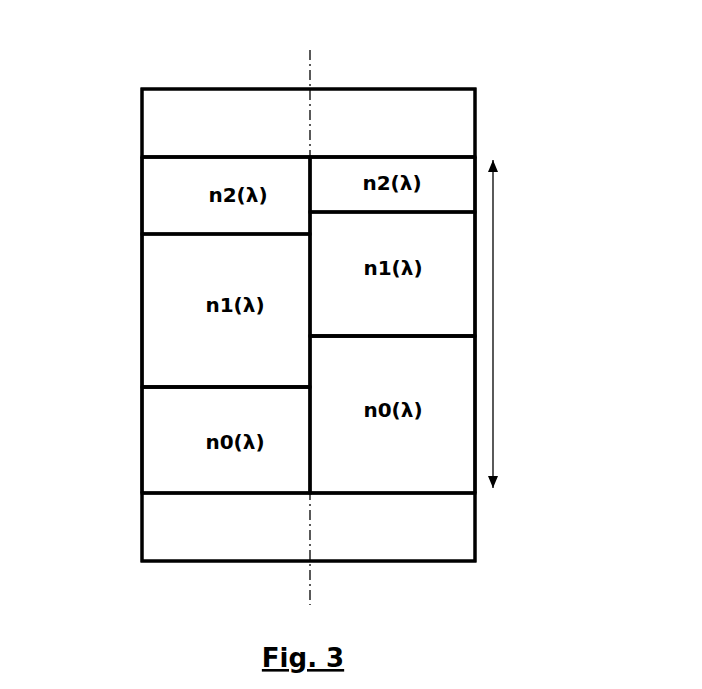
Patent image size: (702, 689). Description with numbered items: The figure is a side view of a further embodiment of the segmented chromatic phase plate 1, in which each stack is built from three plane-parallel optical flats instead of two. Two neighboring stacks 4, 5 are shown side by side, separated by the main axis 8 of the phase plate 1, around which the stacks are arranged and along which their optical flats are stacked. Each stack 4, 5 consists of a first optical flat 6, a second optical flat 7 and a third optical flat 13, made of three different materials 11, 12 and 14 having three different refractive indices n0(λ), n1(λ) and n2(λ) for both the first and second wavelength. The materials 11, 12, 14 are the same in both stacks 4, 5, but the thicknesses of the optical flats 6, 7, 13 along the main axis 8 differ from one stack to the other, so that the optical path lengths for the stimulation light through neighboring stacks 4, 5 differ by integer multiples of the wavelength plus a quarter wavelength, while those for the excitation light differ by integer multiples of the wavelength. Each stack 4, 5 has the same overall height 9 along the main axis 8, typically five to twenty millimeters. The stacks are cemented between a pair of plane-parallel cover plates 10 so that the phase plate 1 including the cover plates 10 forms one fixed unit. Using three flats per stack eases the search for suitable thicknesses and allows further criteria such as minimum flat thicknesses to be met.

The segmented chromatic phase plate 1 is at (491, 84).
The stack 4 is at (477, 461).
The stack 5 is at (140, 478).
The optical flat 6 is at (157, 450).
The optical flat 7 is at (157, 271).
The main axis 8 is at (310, 591).
The overall height 9 is at (494, 251).
The cover plate 10 is at (181, 110).
The material 11 is at (157, 416).
The material 12 is at (157, 338).
The optical flat 13 is at (157, 210).
The material 14 is at (157, 185).